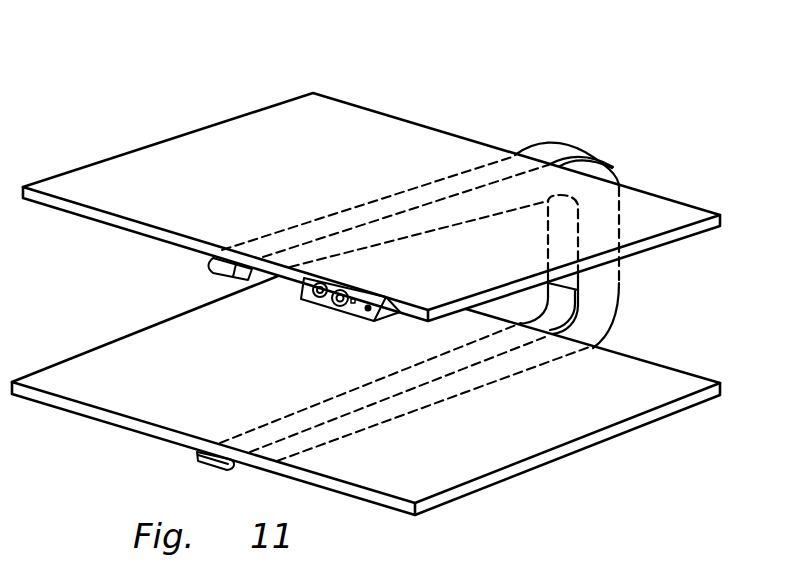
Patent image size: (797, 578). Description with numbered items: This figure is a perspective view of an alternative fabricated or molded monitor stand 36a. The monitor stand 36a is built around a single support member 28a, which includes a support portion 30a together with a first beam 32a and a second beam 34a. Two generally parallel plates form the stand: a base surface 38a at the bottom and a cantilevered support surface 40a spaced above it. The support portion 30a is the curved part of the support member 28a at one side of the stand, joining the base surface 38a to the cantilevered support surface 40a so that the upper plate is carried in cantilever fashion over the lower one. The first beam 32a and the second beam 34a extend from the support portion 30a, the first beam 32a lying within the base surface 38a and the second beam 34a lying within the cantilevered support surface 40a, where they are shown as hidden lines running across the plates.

The support member 28a is at (604, 163).
The support portion 30a is at (603, 290).
The first beam 32a is at (328, 412).
The second beam 34a is at (374, 213).
The monitor stand 36a is at (519, 74).
The base surface 38a is at (128, 350).
The cantilevered support surface 40a is at (160, 156).